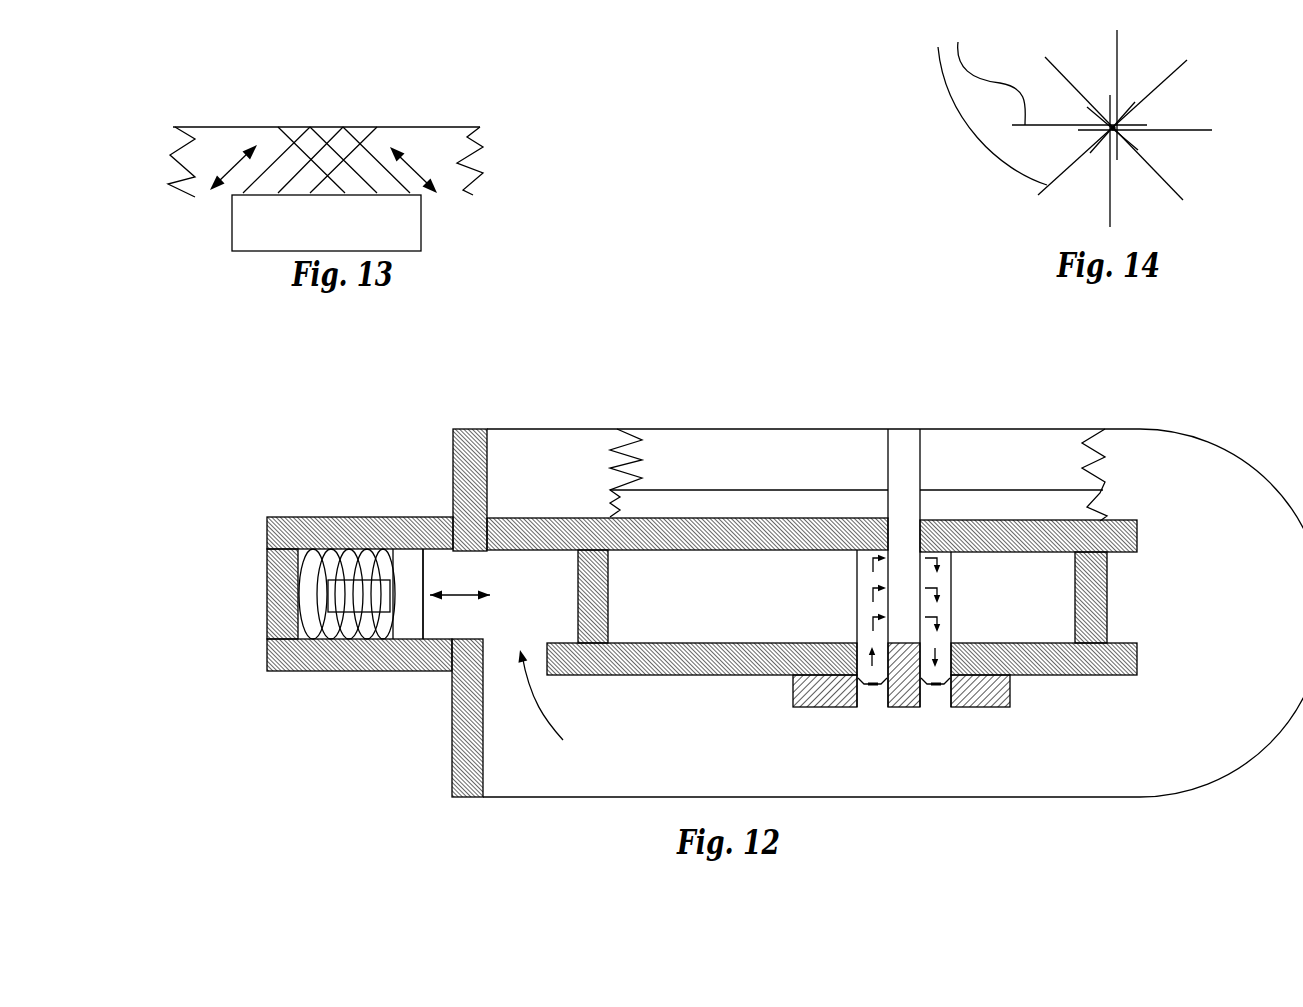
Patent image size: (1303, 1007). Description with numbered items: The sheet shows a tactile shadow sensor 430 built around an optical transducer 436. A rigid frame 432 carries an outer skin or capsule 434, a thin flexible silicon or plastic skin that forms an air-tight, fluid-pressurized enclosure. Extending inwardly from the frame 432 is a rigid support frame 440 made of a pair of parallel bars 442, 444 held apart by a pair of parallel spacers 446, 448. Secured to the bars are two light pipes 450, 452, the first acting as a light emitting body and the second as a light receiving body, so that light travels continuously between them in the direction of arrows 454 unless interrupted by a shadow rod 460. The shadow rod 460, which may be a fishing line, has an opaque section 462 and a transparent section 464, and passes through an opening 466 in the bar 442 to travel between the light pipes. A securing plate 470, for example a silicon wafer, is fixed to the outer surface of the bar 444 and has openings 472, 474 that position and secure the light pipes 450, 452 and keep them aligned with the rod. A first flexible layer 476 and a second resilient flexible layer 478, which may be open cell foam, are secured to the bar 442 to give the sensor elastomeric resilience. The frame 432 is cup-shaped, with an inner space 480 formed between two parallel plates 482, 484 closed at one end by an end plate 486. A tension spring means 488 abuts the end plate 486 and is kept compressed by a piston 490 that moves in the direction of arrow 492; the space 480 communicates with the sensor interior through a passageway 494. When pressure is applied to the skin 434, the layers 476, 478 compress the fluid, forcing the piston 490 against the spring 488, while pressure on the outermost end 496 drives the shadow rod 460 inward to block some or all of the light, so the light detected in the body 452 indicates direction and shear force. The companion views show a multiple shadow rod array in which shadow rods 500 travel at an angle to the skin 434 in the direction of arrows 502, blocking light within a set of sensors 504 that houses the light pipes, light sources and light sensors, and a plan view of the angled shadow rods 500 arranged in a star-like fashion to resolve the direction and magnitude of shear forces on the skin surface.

In FIG. 12, the tactile shadow sensor 430 is at (757, 401).
In FIG. 12, the rigid frame 432 is at (453, 455).
In FIG. 13, the outer skin or capsule 434 is at (423, 127).
In FIG. 12, the outer skin or capsule 434 is at (1193, 440).
In FIG. 12, the optical transducer 436 is at (953, 598).
In FIG. 12, the rigid support frame 440 is at (518, 516).
In FIG. 12, the bar 442 is at (1140, 523).
In FIG. 12, the bar 444 is at (1123, 677).
In FIG. 12, the spacer 446 is at (1105, 614).
In FIG. 12, the spacer 448 is at (603, 613).
In FIG. 12, the light pipe (light emitting body) 450 is at (863, 600).
In FIG. 12, the light pipe (light receiving body) 452 is at (953, 625).
In FIG. 12, the arrows (light flow direction) 454 is at (873, 563).
In FIG. 12, the shadow rod 460 is at (923, 475).
In FIG. 12, the opaque section 462 is at (912, 508).
In FIG. 12, the transparent section 464 is at (902, 633).
In FIG. 12, the opening 466 is at (862, 517).
In FIG. 12, the securing plate (silicon wafer) 470 is at (1010, 692).
In FIG. 12, the opening 472 is at (873, 702).
In FIG. 12, the opening 474 is at (933, 700).
In FIG. 12, the first flexible layer 476 is at (1100, 507).
In FIG. 12, the second resilient flexible layer 478 is at (1040, 432).
In FIG. 12, the inner space 480 is at (443, 567).
In FIG. 12, the plate 482 is at (287, 517).
In FIG. 12, the plate 484 is at (360, 672).
In FIG. 12, the end plate 486 is at (267, 598).
In FIG. 12, the tension spring means 488 is at (297, 640).
In FIG. 12, the piston 490 is at (410, 630).
In FIG. 12, the arrow (piston movement direction) 492 is at (458, 592).
In FIG. 12, the passageway 494 is at (561, 703).
In FIG. 12, the outermost end of shadow rod 496 is at (907, 429).
In FIG. 13, the shadow rods 500 is at (377, 147).
In FIG. 14, the shadow rods 500 is at (1048, 62).
In FIG. 13, the arrows (shadow rod travel direction) 502 is at (233, 170).
In FIG. 13, the set of sensors (array) 504 is at (400, 227).